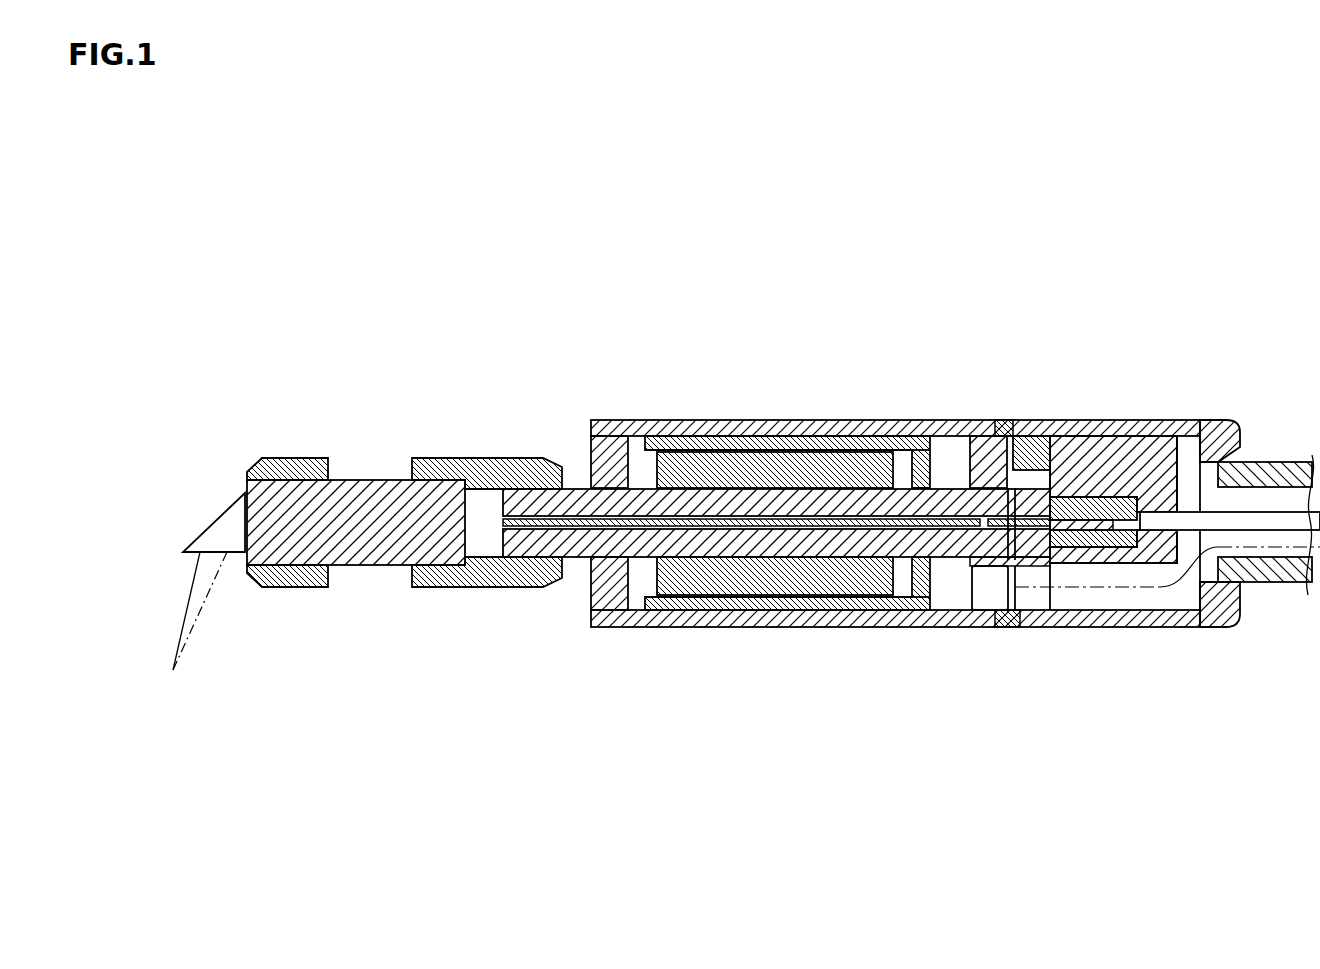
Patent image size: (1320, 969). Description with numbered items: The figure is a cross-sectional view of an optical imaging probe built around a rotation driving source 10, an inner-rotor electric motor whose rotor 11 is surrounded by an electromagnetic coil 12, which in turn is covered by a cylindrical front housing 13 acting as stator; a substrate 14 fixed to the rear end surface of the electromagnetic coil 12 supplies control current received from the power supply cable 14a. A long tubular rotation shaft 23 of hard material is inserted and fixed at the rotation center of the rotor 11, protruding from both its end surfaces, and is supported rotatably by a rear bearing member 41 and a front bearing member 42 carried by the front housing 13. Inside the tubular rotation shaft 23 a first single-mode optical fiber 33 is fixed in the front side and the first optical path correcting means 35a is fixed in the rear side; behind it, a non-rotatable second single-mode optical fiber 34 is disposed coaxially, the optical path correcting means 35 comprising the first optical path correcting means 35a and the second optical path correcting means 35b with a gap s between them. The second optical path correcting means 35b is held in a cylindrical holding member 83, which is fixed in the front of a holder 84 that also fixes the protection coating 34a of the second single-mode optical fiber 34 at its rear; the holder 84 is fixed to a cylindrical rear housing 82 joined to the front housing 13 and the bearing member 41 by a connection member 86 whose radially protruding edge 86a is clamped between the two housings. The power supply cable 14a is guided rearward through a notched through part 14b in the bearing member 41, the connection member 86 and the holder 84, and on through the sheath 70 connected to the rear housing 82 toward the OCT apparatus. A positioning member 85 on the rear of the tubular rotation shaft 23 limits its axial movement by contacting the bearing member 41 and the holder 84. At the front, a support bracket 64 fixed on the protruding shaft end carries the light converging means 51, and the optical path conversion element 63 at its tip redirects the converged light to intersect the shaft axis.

The rotation driving source 10 is at (667, 417).
The rotor 11 is at (830, 460).
The electromagnetic coil 12 is at (707, 609).
The front housing 13 is at (778, 437).
The substrate 14 is at (918, 447).
The power supply cable 14a is at (1137, 589).
The notched through part 14b is at (987, 597).
The tubular rotation shaft 23 is at (572, 559).
The first single-mode optical fiber 33 is at (722, 520).
The second single-mode optical fiber 34 is at (1158, 462).
The protection coating 34a is at (1260, 510).
The optical path correcting means 35 is at (1003, 296).
The first optical path correcting means 35a is at (1010, 472).
The second optical path correcting means 35b is at (1085, 508).
The bearing member 41 is at (975, 437).
The bearing member 42 is at (578, 427).
The light converging means 51 is at (362, 566).
The optical path conversion element 63 is at (215, 517).
The support bracket 64 is at (437, 588).
The sheath 70 is at (1291, 462).
The rear housing 82 is at (1088, 490).
The cylindrical holding member 83 is at (1120, 470).
The holder 84 is at (1200, 512).
The positioning member 85 is at (1023, 515).
The connection member 86 is at (1043, 440).
The edge 86a is at (1003, 426).
The gap s is at (1050, 568).